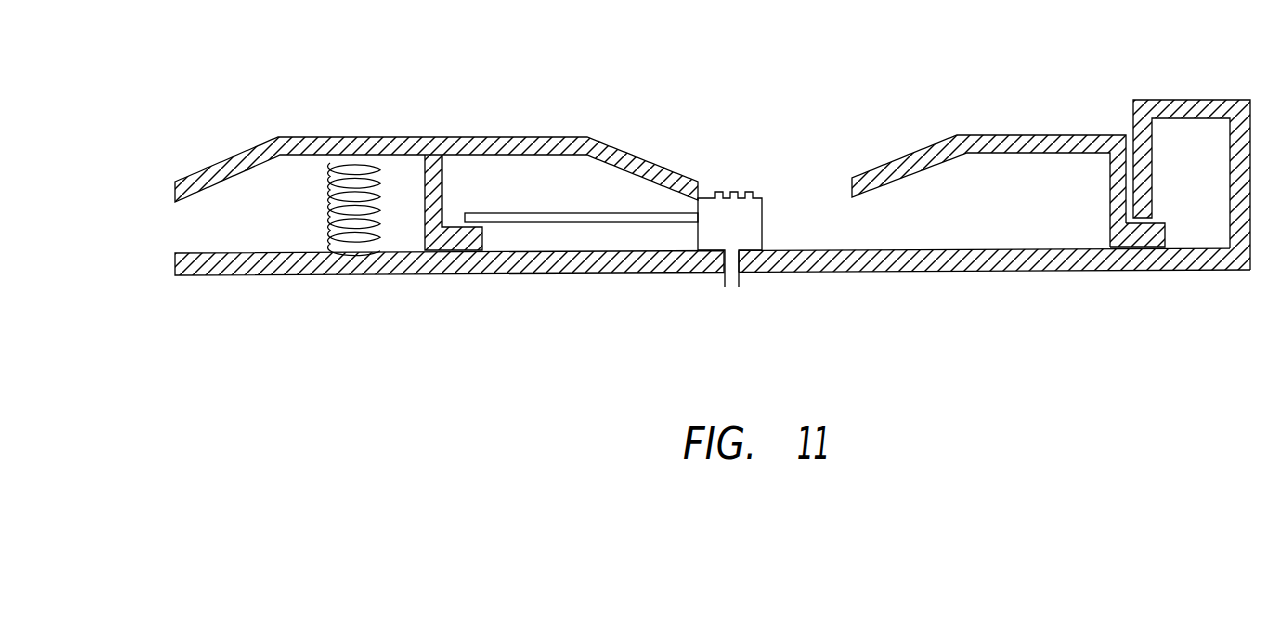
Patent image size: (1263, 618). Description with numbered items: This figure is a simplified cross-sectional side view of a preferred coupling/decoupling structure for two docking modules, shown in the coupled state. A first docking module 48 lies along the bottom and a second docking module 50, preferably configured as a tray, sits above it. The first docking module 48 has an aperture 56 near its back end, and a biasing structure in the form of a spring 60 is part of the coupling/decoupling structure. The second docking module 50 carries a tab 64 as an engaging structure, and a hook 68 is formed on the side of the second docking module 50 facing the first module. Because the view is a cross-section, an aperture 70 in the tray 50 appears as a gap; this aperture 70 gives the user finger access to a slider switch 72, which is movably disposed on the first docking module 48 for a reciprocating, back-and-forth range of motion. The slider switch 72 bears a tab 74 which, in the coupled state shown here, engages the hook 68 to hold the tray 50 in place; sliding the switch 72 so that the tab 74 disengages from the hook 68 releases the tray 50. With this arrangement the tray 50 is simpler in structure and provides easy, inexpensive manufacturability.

The first docking module 48 is at (853, 280).
The second docking module 50 is at (330, 125).
The aperture 56 is at (1163, 223).
The spring 60 is at (333, 207).
The tab 64 is at (1115, 248).
The hook 68 is at (438, 243).
The aperture 70 is at (850, 190).
The slider switch 72 is at (746, 192).
The tab 74 is at (565, 222).